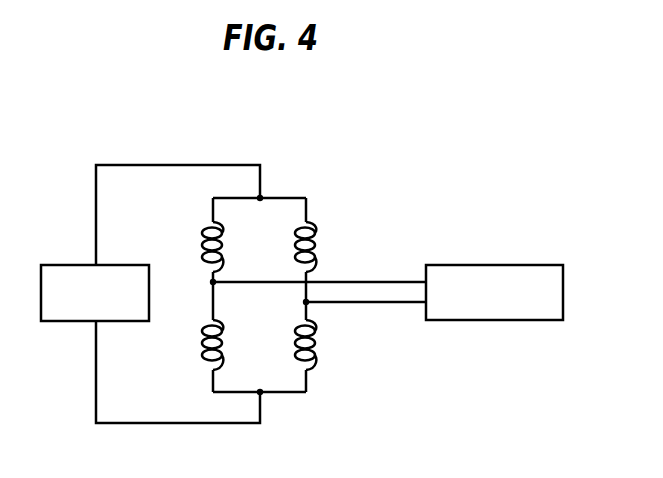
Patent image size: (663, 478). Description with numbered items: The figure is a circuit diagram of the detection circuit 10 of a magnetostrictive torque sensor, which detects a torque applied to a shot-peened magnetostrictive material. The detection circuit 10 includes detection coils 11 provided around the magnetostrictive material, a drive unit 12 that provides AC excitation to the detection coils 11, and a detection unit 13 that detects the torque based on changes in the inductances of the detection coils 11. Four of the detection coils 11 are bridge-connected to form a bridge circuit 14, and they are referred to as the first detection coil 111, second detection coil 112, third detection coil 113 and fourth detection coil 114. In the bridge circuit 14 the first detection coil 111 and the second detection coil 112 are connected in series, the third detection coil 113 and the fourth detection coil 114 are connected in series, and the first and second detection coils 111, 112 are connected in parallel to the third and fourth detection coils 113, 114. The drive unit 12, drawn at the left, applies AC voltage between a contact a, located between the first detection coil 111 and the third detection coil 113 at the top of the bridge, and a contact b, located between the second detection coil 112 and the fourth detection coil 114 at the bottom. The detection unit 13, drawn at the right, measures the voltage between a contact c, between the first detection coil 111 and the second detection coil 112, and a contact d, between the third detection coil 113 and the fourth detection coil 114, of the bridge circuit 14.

The detection circuit 10 is at (61, 157).
The detection coils 11 is at (210, 235).
The drive unit 12 is at (52, 264).
The detection unit 13 is at (517, 265).
The bridge circuit 14 is at (314, 206).
The first detection coil 111 is at (225, 243).
The second detection coil 112 is at (225, 339).
The third detection coil 113 is at (318, 243).
The fourth detection coil 114 is at (318, 339).
The contact a is at (262, 197).
The contact b is at (263, 395).
The contact c is at (213, 282).
The contact d is at (306, 302).